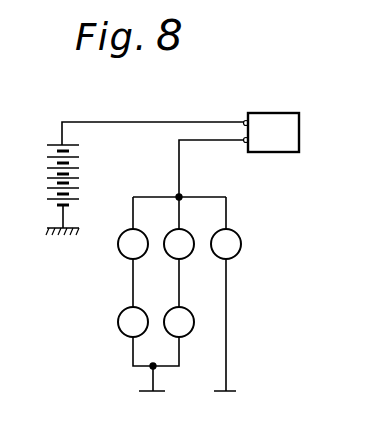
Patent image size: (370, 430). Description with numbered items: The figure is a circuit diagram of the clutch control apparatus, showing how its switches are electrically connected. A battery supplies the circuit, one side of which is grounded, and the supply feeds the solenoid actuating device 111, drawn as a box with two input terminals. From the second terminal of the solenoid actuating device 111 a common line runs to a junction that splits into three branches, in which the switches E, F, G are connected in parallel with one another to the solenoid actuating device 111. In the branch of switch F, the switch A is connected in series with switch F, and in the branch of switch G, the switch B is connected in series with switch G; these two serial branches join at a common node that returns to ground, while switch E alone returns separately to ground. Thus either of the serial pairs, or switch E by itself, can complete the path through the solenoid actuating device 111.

The solenoid actuating device 111 is at (277, 124).
The switch A is at (133, 322).
The switch B is at (179, 322).
The switch E is at (226, 244).
The switch F is at (133, 244).
The switch G is at (179, 244).